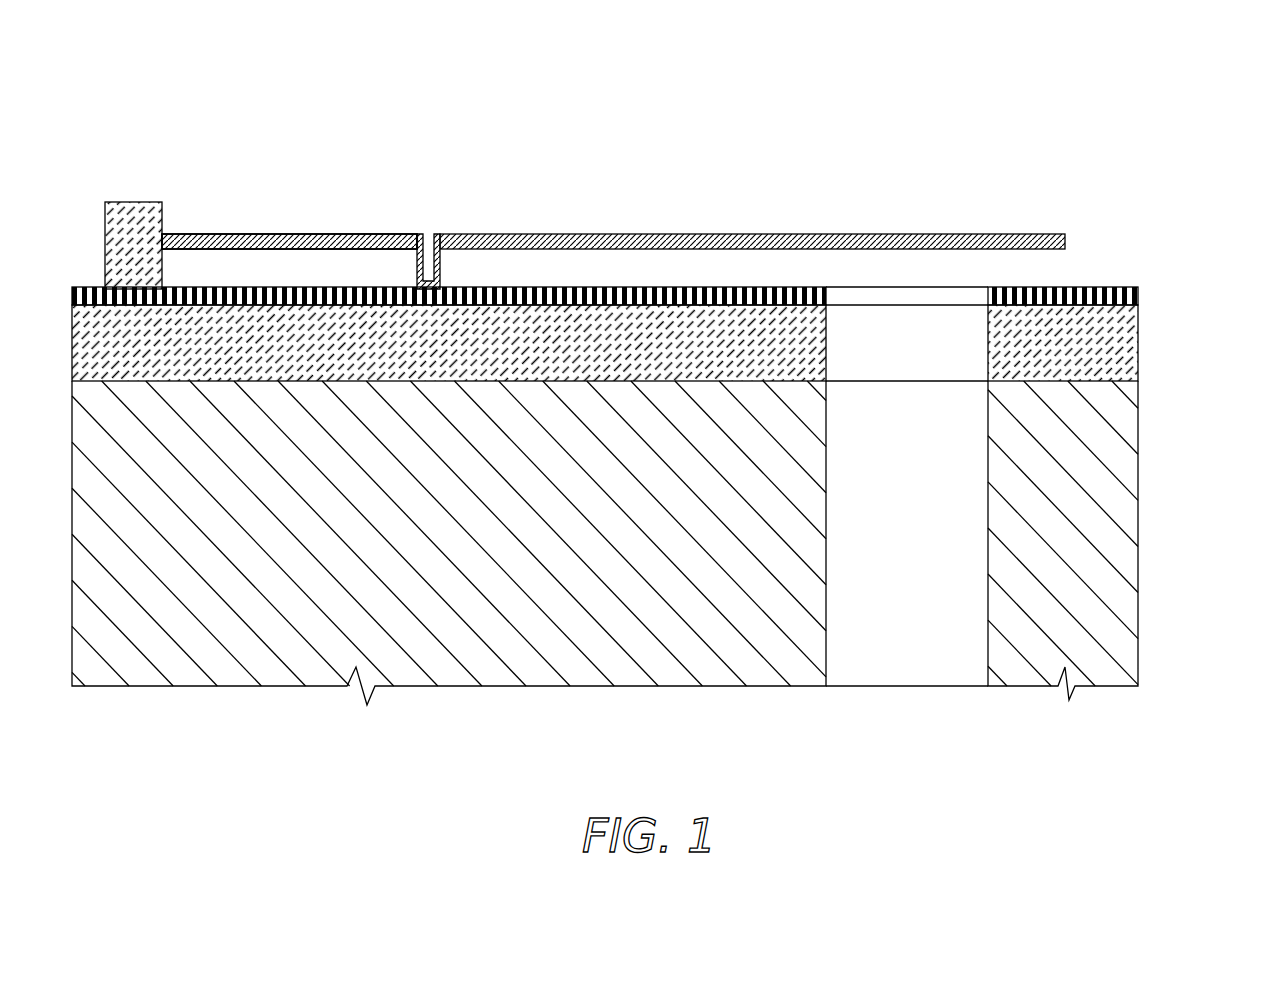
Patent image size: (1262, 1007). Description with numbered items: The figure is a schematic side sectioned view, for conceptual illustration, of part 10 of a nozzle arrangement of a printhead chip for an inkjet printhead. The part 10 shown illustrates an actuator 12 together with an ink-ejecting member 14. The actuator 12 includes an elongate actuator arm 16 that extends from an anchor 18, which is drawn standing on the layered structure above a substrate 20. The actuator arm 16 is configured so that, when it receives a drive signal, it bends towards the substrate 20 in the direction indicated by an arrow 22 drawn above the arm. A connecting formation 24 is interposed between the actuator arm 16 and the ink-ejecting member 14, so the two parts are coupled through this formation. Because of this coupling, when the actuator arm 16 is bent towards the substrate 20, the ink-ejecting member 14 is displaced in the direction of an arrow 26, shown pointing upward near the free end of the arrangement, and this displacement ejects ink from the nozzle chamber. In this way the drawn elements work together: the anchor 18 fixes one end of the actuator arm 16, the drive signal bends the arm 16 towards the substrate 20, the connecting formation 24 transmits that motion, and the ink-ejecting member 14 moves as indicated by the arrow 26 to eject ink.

The part of a nozzle arrangement 10 is at (750, 122).
The actuator 12 is at (202, 234).
The ink-ejecting member 14 is at (648, 234).
The actuator arm 16 is at (265, 234).
The anchor 18 is at (130, 202).
The substrate 20 is at (1138, 343).
The arrow 22 is at (383, 208).
The connecting formation 24 is at (424, 234).
The arrow 26 is at (1045, 217).